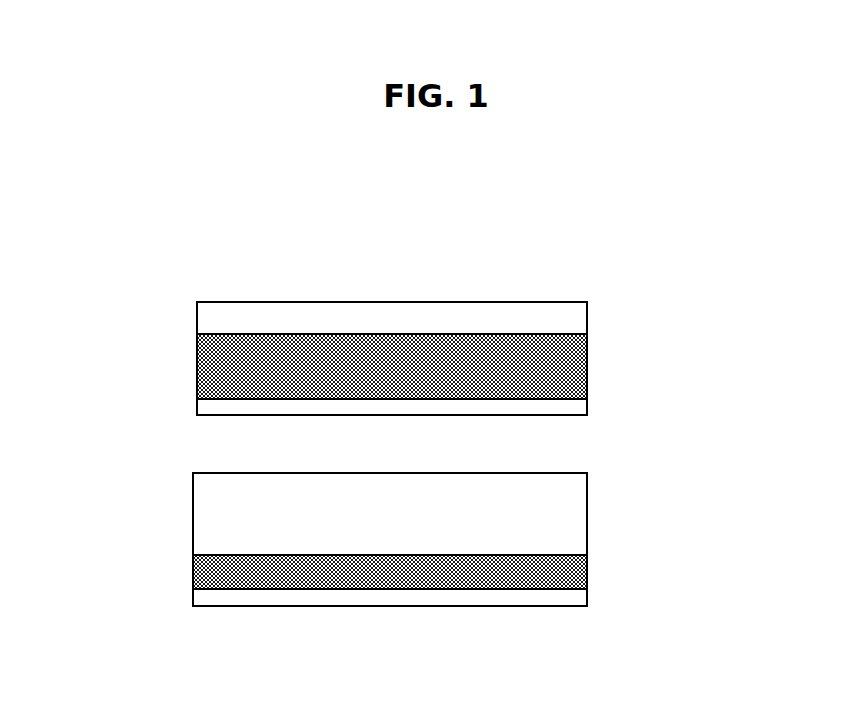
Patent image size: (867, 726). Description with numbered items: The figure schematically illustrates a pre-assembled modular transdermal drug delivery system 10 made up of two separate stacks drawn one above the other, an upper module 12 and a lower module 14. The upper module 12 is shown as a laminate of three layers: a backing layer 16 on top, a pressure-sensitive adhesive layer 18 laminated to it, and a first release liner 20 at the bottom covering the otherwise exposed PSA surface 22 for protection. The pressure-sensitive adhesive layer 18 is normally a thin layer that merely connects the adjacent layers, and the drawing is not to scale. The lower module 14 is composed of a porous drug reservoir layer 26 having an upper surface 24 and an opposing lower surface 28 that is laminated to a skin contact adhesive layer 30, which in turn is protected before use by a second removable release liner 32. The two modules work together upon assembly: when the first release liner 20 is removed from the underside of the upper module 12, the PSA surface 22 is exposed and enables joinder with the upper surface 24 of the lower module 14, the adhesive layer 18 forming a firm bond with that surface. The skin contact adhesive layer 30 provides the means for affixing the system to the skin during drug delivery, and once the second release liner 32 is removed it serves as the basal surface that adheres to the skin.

The system 10 is at (553, 240).
The upper module 12 is at (606, 302).
The lower module 14 is at (612, 497).
The backing layer 16 is at (231, 311).
The pressure-sensitive adhesive layer 18 is at (571, 362).
The first release liner 20 is at (571, 410).
The PSA surface 22 is at (222, 400).
The upper surface 24 is at (233, 471).
The porous drug reservoir layer 26 is at (212, 523).
The lower surface 28 is at (233, 554).
The skin contact adhesive layer 30 is at (571, 573).
The second removable release liner 32 is at (565, 601).